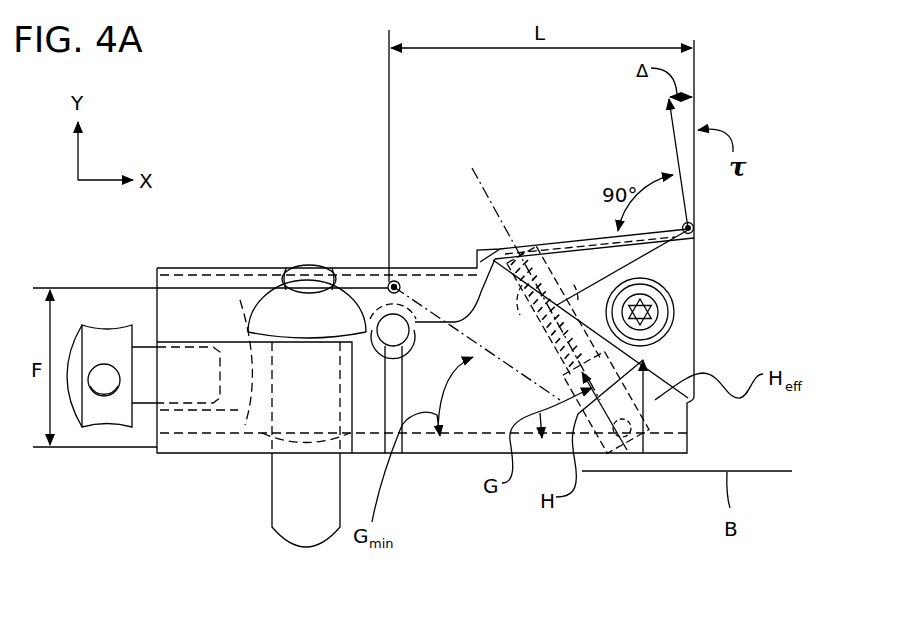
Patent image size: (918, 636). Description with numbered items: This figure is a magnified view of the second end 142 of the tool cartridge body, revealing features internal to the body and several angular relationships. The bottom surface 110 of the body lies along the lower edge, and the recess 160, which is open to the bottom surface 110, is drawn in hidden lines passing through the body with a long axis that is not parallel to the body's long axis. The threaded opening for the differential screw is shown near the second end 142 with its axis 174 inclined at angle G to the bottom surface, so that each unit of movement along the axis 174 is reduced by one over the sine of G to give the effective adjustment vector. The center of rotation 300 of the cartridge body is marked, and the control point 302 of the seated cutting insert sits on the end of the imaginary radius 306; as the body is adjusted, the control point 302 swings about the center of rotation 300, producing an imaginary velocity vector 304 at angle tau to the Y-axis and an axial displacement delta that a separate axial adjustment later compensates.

The bottom surface 110 is at (467, 457).
The second end 142 is at (729, 310).
The recess 160 is at (390, 395).
The axis 174 is at (497, 210).
The center of rotation 300 is at (386, 282).
The control point 302 is at (694, 228).
The imaginary vector of velocity 304 is at (663, 130).
The imaginary radius 306 is at (455, 262).